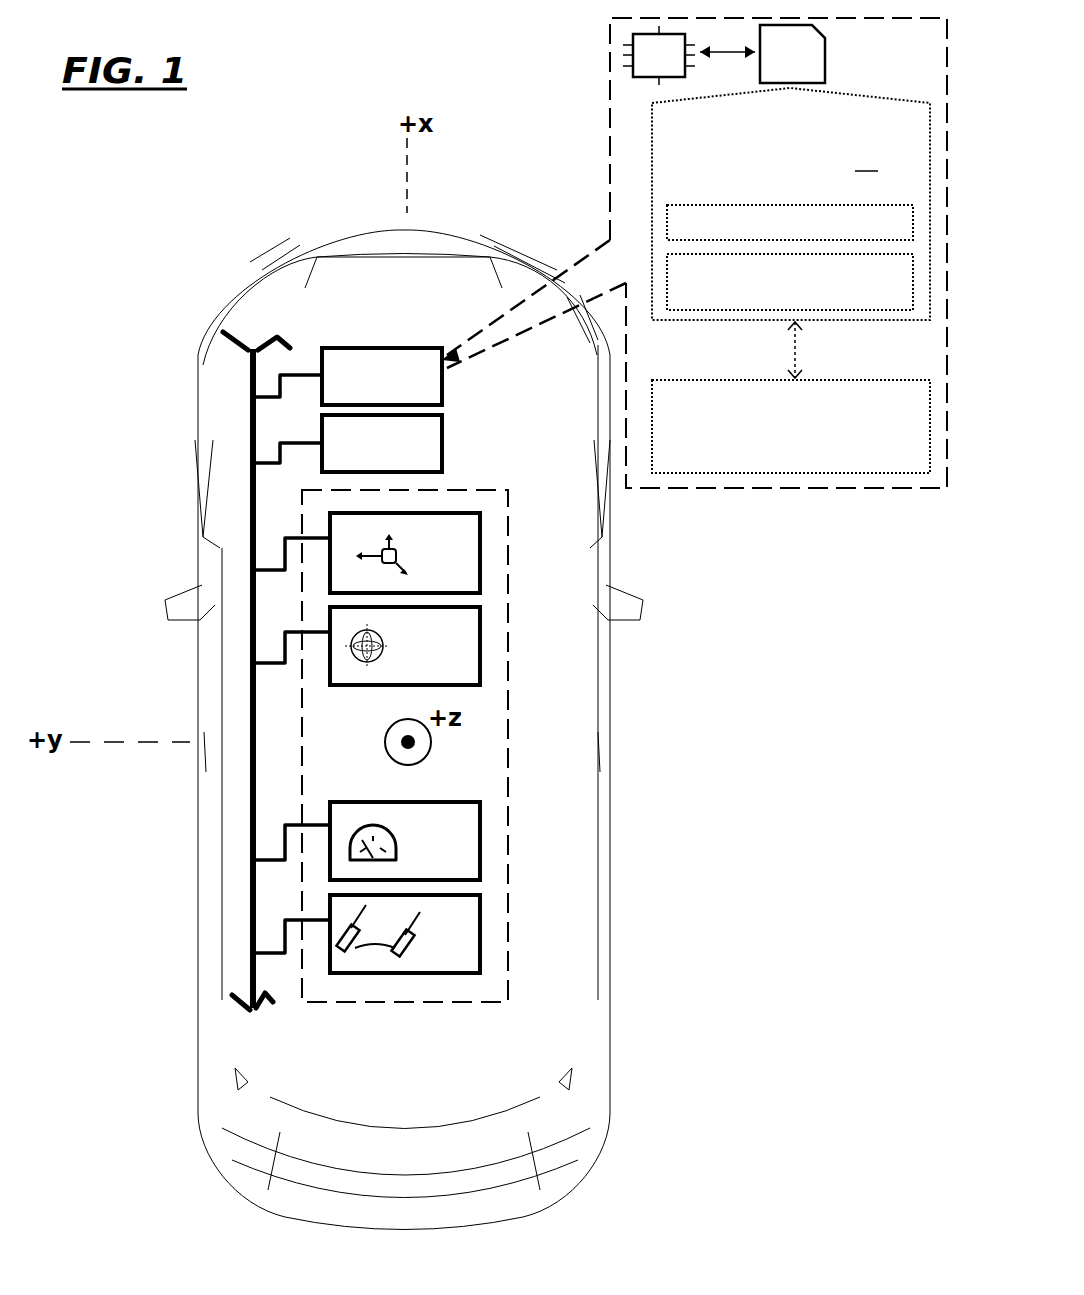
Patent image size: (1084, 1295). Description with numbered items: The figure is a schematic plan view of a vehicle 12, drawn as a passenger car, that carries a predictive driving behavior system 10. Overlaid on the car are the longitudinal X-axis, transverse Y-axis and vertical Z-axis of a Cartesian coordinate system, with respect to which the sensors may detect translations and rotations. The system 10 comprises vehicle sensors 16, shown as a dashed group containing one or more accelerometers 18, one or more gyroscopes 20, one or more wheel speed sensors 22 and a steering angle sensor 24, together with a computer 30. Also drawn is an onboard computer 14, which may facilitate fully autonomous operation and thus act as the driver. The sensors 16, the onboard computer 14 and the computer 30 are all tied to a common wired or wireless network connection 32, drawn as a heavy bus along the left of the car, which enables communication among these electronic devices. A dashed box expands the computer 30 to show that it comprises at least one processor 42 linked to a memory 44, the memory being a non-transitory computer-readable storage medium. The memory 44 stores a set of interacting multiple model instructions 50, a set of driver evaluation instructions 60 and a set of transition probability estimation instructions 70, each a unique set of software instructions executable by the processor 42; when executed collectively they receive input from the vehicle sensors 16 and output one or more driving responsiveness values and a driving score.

The predictive driving behavior system 10 is at (228, 578).
The vehicle 12 is at (338, 228).
The onboard computer 14 is at (370, 454).
The vehicle sensors 16 is at (446, 1014).
The accelerometer 18 is at (423, 564).
The gyroscope 20 is at (423, 657).
The wheel speed sensor 22 is at (423, 852).
The steering angle sensor 24 is at (423, 946).
The computer 30 is at (370, 387).
The network connection 32 is at (243, 477).
The processor 42 is at (648, 65).
The memory 44 is at (781, 65).
The interacting multiple model (IMM) instructions 50 is at (887, 232).
The driver evaluation instructions 60 is at (864, 305).
The transition probability estimation instructions 70 is at (865, 463).